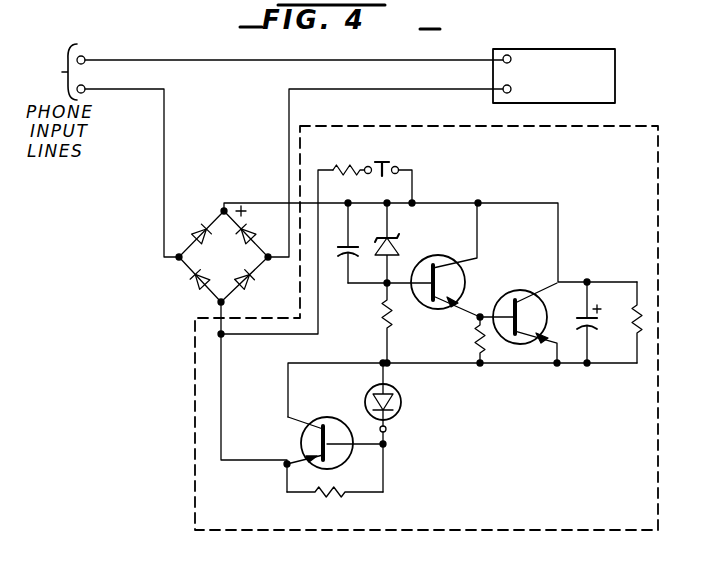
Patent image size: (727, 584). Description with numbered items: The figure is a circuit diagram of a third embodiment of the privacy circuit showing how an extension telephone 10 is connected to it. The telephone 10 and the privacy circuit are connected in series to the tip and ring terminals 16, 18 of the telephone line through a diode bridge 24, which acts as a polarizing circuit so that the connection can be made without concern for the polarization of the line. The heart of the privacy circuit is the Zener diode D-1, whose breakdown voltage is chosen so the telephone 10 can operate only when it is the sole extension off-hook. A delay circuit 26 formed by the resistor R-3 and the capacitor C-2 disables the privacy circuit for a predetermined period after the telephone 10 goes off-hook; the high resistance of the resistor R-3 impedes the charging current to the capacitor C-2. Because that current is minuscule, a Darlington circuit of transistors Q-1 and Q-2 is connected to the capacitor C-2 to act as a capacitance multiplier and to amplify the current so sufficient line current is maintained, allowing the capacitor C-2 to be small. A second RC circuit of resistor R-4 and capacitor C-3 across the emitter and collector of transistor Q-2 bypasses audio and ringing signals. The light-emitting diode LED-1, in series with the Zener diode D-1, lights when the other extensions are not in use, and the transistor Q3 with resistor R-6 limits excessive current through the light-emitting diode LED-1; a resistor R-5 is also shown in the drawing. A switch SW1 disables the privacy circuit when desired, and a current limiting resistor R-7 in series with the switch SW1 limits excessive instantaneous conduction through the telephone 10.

The extension telephone 10 is at (606, 88).
The tip terminal 16 is at (88, 86).
The ring terminal 18 is at (88, 56).
The diode bridge 24 is at (188, 285).
The delay circuit 26 is at (379, 302).
The current limiting resistor R-7 is at (355, 155).
The switch SW1 is at (398, 163).
The capacitor C-2 is at (342, 260).
The Zener diode D-1 is at (403, 247).
The resistor R-3 is at (378, 320).
The transistor Q-1 is at (430, 300).
The transistor Q-2 is at (537, 286).
The resistor R-5 is at (474, 340).
The capacitor C-3 is at (600, 330).
The resistor R-4 is at (631, 313).
The transistor Q3 is at (345, 414).
The light-emitting diode LED-1 is at (408, 400).
The resistor R-6 is at (320, 496).